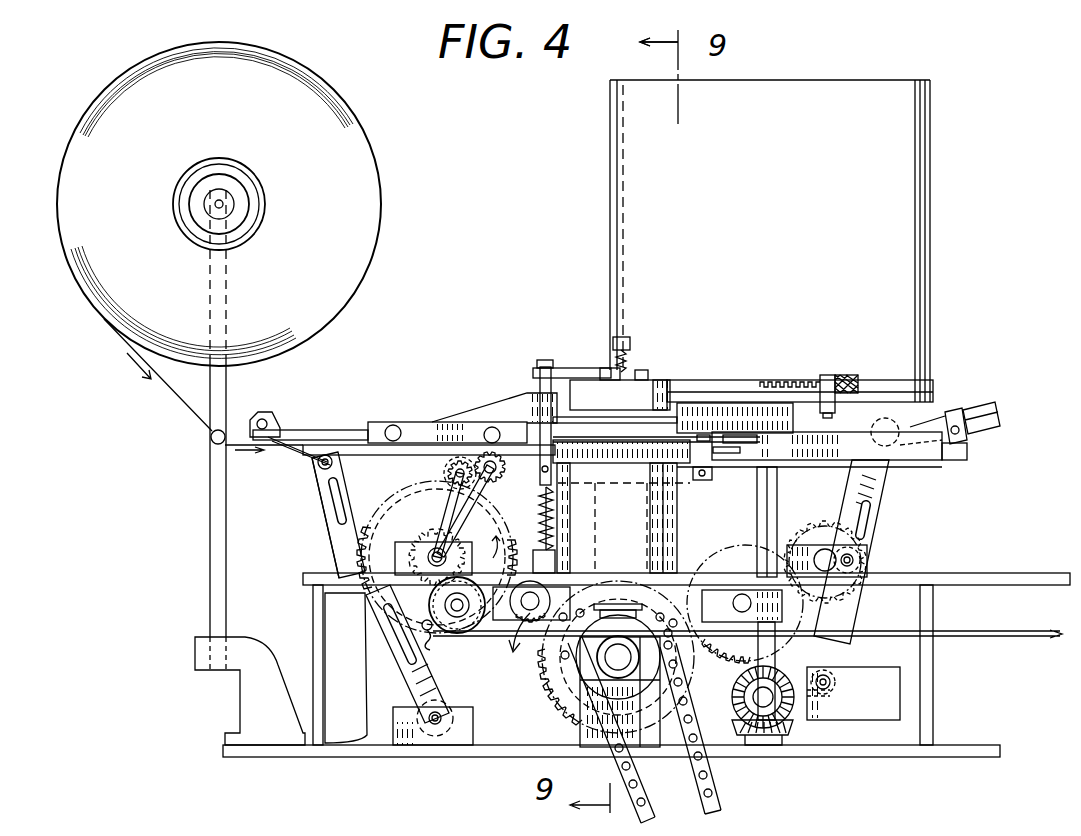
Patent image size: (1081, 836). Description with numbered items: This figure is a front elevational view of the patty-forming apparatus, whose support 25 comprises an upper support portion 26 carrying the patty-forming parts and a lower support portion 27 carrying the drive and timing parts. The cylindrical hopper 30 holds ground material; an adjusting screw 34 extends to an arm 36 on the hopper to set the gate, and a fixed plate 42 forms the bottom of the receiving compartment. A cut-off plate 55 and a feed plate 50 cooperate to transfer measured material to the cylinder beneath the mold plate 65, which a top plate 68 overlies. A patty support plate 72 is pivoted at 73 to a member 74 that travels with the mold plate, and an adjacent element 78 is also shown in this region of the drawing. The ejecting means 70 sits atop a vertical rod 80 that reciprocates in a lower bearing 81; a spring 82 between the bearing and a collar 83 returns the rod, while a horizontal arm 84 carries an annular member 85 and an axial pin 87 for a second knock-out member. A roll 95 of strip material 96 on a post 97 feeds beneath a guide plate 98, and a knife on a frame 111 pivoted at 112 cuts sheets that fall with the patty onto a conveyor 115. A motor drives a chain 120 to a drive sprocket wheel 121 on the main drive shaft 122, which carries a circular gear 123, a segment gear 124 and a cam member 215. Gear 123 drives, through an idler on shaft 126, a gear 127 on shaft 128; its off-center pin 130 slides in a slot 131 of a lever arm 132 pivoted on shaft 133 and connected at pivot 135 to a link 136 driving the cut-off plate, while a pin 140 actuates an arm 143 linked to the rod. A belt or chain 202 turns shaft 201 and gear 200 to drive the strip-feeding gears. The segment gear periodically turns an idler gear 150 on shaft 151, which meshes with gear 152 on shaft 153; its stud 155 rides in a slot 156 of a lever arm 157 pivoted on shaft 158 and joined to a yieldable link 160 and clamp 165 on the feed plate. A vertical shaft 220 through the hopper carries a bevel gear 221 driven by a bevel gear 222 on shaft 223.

The roll of strip material 95 is at (78, 144).
The strip material 96 is at (190, 411).
The post 97 is at (213, 522).
The cut-off plate 55 is at (276, 424).
The guide plate 98 is at (330, 428).
The link 136 is at (292, 452).
The pivot 135 is at (318, 468).
The slot 131 is at (335, 498).
The lever arm 132 is at (328, 522).
The pivot 112 is at (393, 425).
The frame 111 is at (461, 415).
The second arm 143 is at (541, 455).
The gear 200 is at (453, 458).
The shaft 201 is at (450, 476).
The belt or chain 202 is at (448, 500).
The gear 127 is at (437, 557).
The shaft 128 is at (447, 552).
The vertical rod 80 is at (540, 490).
The spring 82 is at (540, 507).
The lower bearing 81 is at (555, 562).
The collar 83 is at (552, 480).
The patty support plate 72 is at (646, 446).
The mold plate 65 is at (623, 466).
The ejecting means 70 is at (582, 347).
The horizontal arm 84 is at (543, 357).
The axial pin 87 is at (625, 335).
The top plate 68 is at (643, 418).
The annular member 85 is at (668, 400).
The adjusting screw 34 is at (731, 380).
The arm 36 is at (828, 375).
The hopper 30 is at (946, 186).
The pivot 73 is at (704, 436).
The bracket 78 is at (745, 437).
The member 74 is at (703, 481).
The fixed plate 42 is at (818, 463).
The feed plate 50 is at (968, 451).
The upper support portion 26 is at (990, 474).
The support 25 is at (989, 524).
The lower support portion 27 is at (1010, 700).
The conveyor 115 is at (975, 578).
The clamp 165 is at (956, 410).
The yieldable link 160 is at (995, 403).
The lever arm 157 is at (874, 486).
The slot 156 is at (864, 522).
The gear 152 is at (830, 520).
The shaft 153 is at (820, 550).
The stud 155 is at (880, 547).
The vertical shaft 220 is at (758, 500).
The circular idler gear 150 is at (732, 548).
The shaft 151 is at (735, 606).
The bevel gear 221 is at (797, 728).
The bevel gear 222 is at (736, 693).
The shaft 158 is at (831, 680).
The shaft 223 is at (840, 692).
The main drive shaft 122 is at (590, 700).
The circular gear 123 is at (541, 683).
The cam member 215 is at (562, 690).
The drive sprocket wheel 121 is at (573, 648).
The segment gear 124 is at (649, 758).
The drive chain 120 is at (714, 788).
The off-center pin 130 is at (368, 612).
The shaft 133 is at (428, 715).
The pin 140 is at (431, 644).
The shaft 126 is at (494, 638).